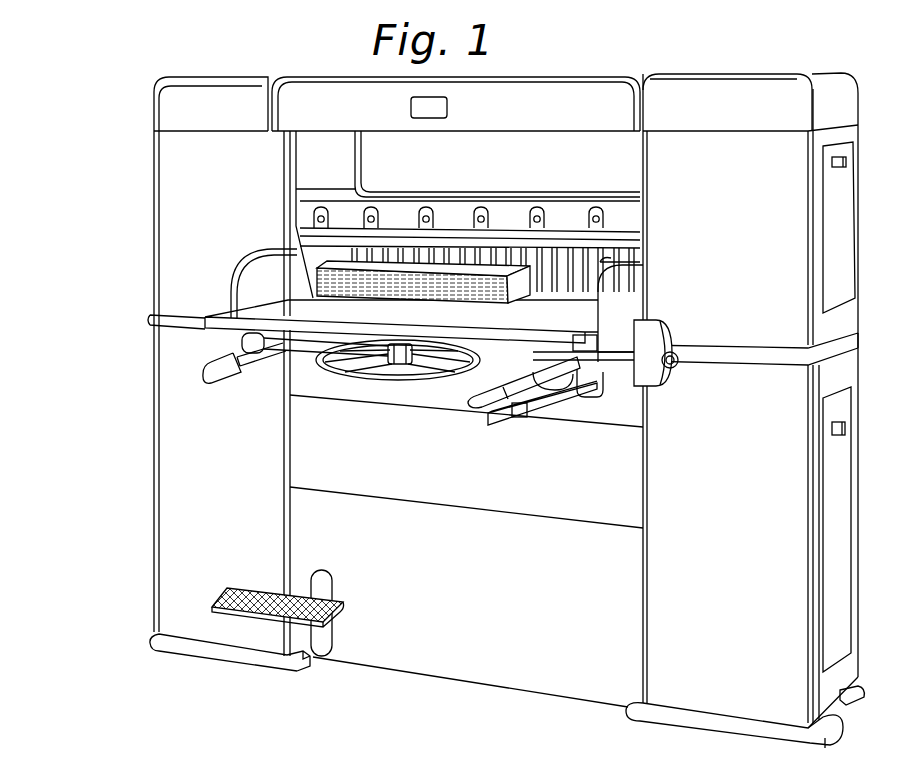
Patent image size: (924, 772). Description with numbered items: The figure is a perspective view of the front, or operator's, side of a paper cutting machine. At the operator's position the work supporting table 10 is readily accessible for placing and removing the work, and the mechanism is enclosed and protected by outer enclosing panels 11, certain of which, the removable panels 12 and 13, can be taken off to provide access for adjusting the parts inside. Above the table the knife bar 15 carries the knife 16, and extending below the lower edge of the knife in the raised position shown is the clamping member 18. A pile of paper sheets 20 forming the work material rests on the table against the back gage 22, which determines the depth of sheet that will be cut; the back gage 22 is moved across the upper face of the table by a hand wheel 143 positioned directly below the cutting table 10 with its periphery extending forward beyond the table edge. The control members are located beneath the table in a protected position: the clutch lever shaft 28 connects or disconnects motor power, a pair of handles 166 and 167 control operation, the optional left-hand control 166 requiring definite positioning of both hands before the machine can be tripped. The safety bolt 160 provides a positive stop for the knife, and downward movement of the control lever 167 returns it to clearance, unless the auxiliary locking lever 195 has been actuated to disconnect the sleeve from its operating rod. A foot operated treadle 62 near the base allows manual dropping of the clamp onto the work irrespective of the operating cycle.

The work supporting table 10 is at (262, 317).
The outer enclosing panels 11 is at (172, 191).
The removable panel 12 is at (840, 468).
The removable panel 13 is at (843, 224).
The knife bar 15 is at (630, 212).
The knife 16 is at (633, 249).
The clamping member 18 is at (628, 261).
The pile of paper sheets 20 is at (332, 287).
The back gage 22 is at (590, 291).
The clutch lever shaft 28 is at (678, 361).
The foot operated treadle 62 is at (262, 585).
The hand wheel 143 is at (387, 374).
The safety bolt 160 is at (597, 383).
The left-hand control handle 166 is at (216, 379).
The control lever 167 is at (473, 400).
The auxiliary locking lever 195 is at (507, 413).